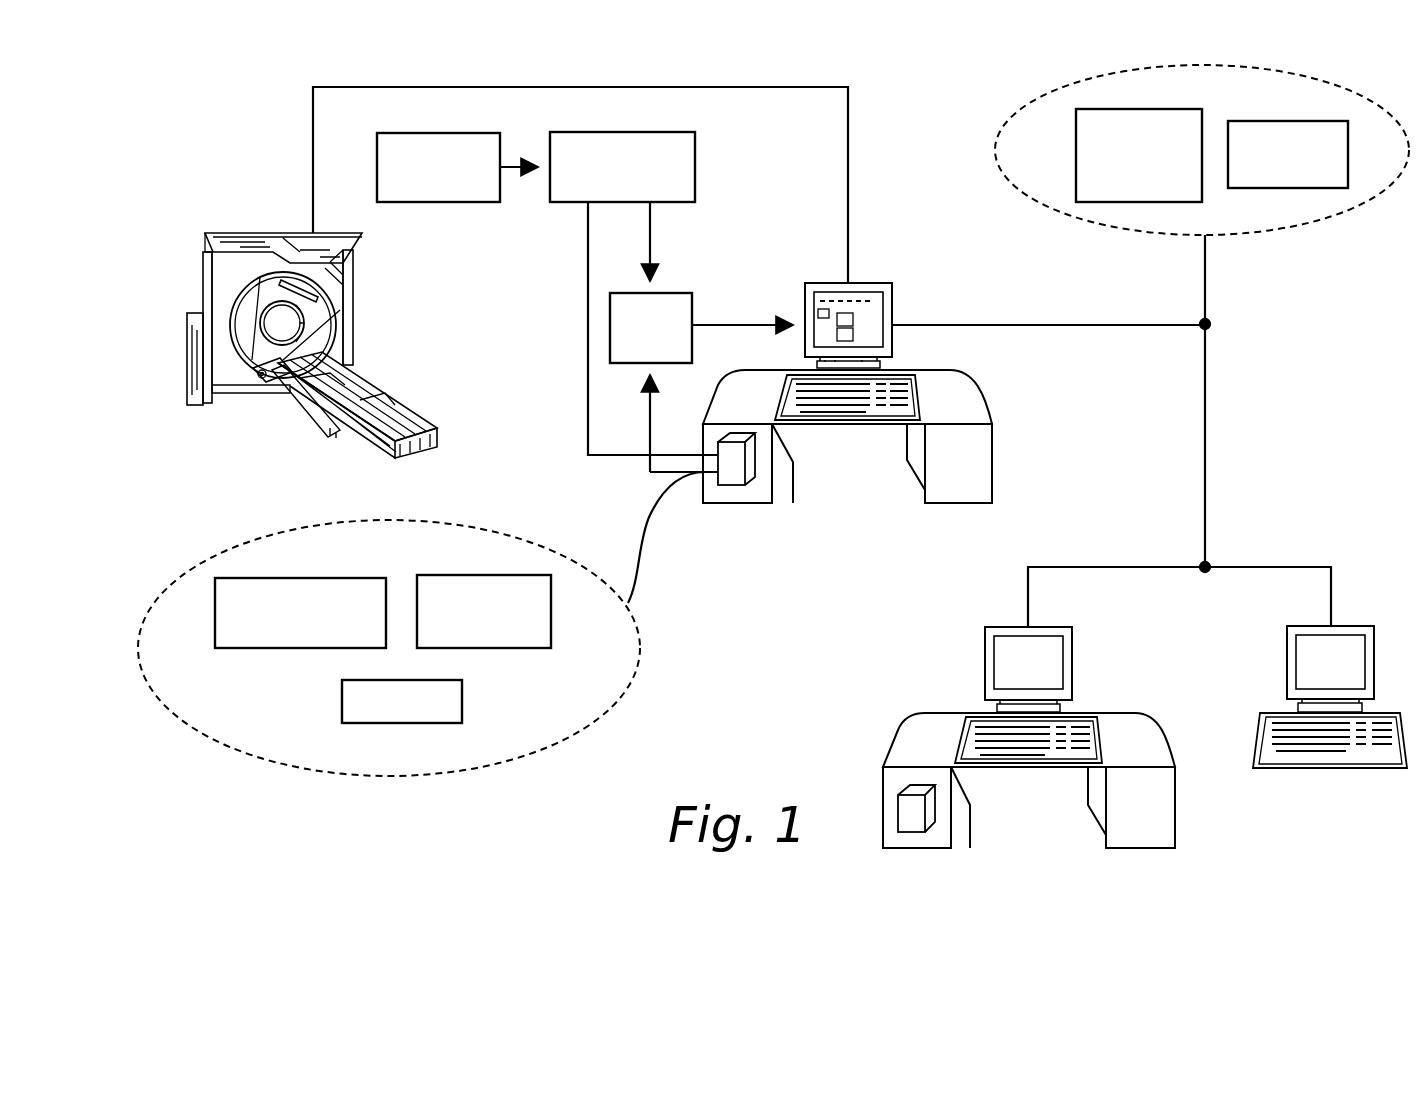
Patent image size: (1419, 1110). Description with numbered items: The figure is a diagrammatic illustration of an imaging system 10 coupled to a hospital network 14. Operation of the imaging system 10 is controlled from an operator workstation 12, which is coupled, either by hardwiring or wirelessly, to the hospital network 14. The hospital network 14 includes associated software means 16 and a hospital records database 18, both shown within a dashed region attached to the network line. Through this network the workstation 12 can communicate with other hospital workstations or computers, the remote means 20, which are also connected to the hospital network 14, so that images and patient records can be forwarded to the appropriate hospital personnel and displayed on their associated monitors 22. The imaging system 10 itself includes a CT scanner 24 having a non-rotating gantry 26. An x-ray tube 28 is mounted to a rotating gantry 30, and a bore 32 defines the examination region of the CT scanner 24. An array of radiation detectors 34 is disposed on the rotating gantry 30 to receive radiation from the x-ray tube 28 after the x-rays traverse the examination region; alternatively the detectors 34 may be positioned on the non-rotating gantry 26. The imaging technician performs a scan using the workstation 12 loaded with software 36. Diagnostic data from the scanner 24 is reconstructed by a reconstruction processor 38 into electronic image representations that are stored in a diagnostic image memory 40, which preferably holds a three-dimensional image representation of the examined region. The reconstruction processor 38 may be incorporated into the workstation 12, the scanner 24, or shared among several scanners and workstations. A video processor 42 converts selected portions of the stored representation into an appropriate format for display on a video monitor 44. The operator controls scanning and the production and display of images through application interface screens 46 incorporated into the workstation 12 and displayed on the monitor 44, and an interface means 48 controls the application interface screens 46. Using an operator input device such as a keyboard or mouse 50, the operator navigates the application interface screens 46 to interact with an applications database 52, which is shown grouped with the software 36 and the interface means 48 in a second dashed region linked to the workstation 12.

The imaging system 10 is at (226, 130).
The operator workstation 12 is at (888, 363).
The hospital network 14 is at (1205, 448).
The software means 16 is at (1076, 157).
The hospital records database 18 is at (1308, 188).
The remote means 20 is at (1145, 734).
The monitors 22 is at (1016, 674).
The CT scanner 24 is at (232, 233).
The non-rotating gantry 26 is at (215, 270).
The x-ray tube 28 is at (262, 382).
The rotating gantry 30 is at (320, 346).
The bore 32 is at (278, 323).
The array of radiation detectors 34 is at (318, 303).
The software 36 is at (462, 700).
The reconstruction processor 38 is at (467, 202).
The diagnostic image memory 40 is at (695, 170).
The video processor 42 is at (692, 311).
The video monitor 44 is at (890, 296).
The application interface screens 46 is at (868, 300).
The interface means 48 is at (443, 575).
The keyboard or mouse 50 is at (790, 395).
The applications database 52 is at (275, 648).